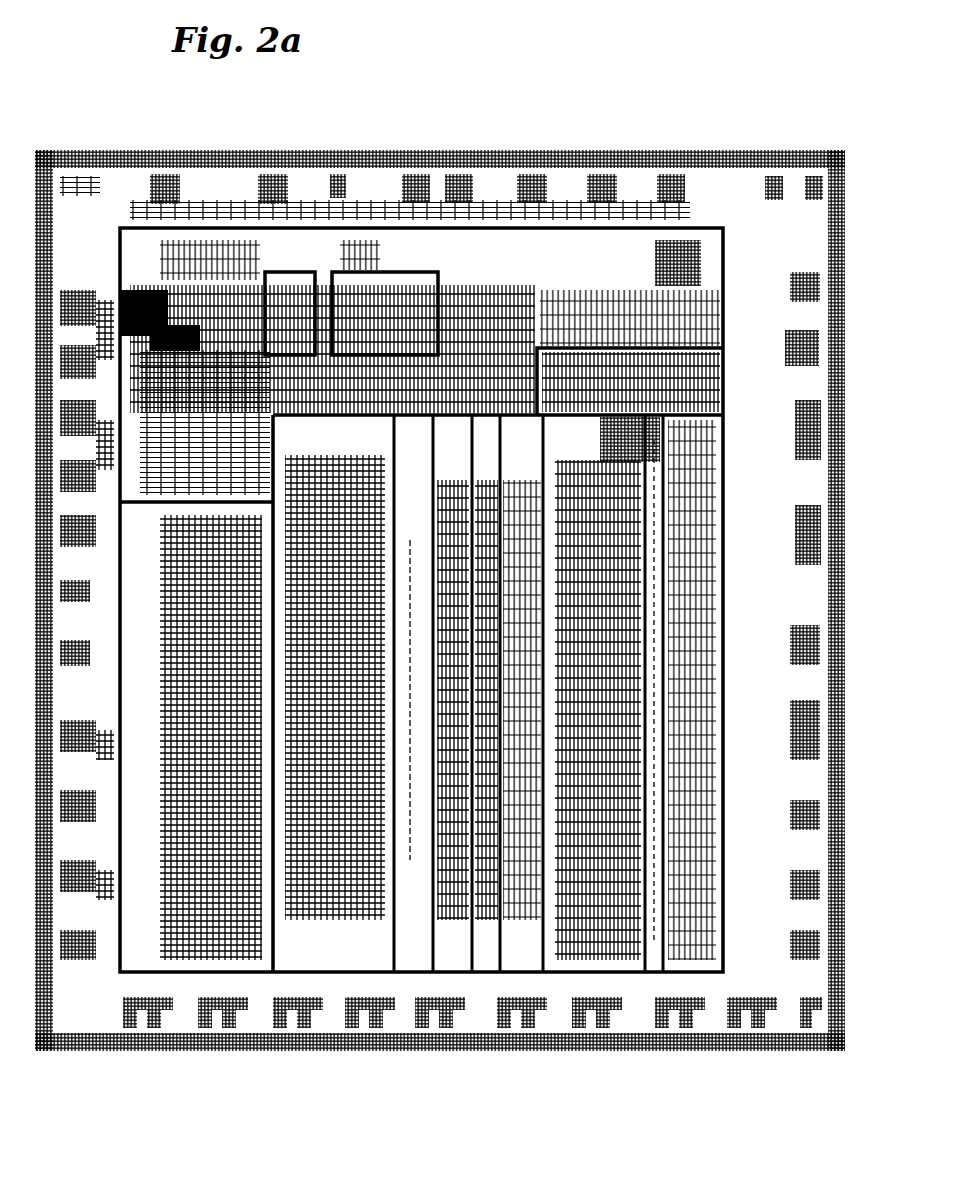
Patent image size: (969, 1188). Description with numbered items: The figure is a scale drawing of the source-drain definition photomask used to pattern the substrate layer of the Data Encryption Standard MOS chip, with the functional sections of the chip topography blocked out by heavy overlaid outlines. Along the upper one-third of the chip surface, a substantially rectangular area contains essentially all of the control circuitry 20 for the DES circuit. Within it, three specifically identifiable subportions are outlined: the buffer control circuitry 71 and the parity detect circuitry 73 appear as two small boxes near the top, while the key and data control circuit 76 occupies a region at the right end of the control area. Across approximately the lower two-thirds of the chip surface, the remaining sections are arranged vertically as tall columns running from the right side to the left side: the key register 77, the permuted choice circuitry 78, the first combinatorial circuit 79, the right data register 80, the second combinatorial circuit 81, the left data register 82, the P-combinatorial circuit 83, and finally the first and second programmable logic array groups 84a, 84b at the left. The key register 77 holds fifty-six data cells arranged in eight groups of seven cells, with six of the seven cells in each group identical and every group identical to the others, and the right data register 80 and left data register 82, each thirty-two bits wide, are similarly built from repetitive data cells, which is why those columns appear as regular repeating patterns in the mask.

The control circuitry 20 is at (712, 255).
The buffer control circuitry 71 is at (284, 278).
The parity detect circuitry 73 is at (365, 285).
The key and data control circuit 76 is at (715, 378).
The key register 77 is at (705, 965).
The permuted choice circuitry 78 is at (650, 968).
The first combinatorial circuit 79 is at (583, 965).
The right data register 80 is at (520, 965).
The second combinatorial circuit 81 is at (484, 965).
The left data register 82 is at (453, 965).
The P-combinatorial circuit 83 is at (411, 965).
The first programmable logic array group 84a is at (332, 965).
The second programmable logic array group 84b is at (127, 968).